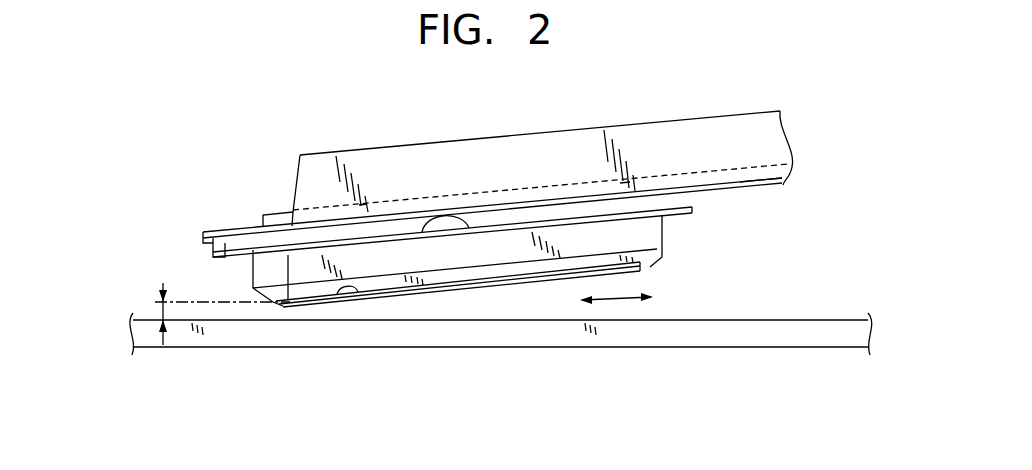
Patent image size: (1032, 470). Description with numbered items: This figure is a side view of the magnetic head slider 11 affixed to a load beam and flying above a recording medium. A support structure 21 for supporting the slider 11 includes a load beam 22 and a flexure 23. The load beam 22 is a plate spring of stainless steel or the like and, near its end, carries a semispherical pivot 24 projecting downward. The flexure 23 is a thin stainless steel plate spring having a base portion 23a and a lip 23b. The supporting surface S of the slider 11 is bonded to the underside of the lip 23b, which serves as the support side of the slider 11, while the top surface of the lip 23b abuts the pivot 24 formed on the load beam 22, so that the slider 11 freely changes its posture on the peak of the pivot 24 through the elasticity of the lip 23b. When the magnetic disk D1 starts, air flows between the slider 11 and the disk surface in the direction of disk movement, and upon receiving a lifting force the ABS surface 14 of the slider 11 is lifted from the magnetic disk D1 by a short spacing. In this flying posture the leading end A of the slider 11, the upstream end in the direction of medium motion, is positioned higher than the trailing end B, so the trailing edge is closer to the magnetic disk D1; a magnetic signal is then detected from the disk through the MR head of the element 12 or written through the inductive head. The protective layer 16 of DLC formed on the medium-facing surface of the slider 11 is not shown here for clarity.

The slider 11 is at (528, 245).
The element 12 is at (282, 263).
The ABS surface 14 is at (347, 294).
The protective layer 16 is at (505, 284).
The support structure 21 is at (722, 210).
The load beam 22 is at (681, 114).
The flexure 23 is at (750, 200).
The base portion 23a is at (778, 188).
The lip 23b is at (672, 224).
The pivot 24 is at (447, 225).
The supporting surface S is at (333, 240).
The magnetic disk D1 is at (470, 336).
The leading end A is at (628, 292).
The trailing end B is at (561, 302).